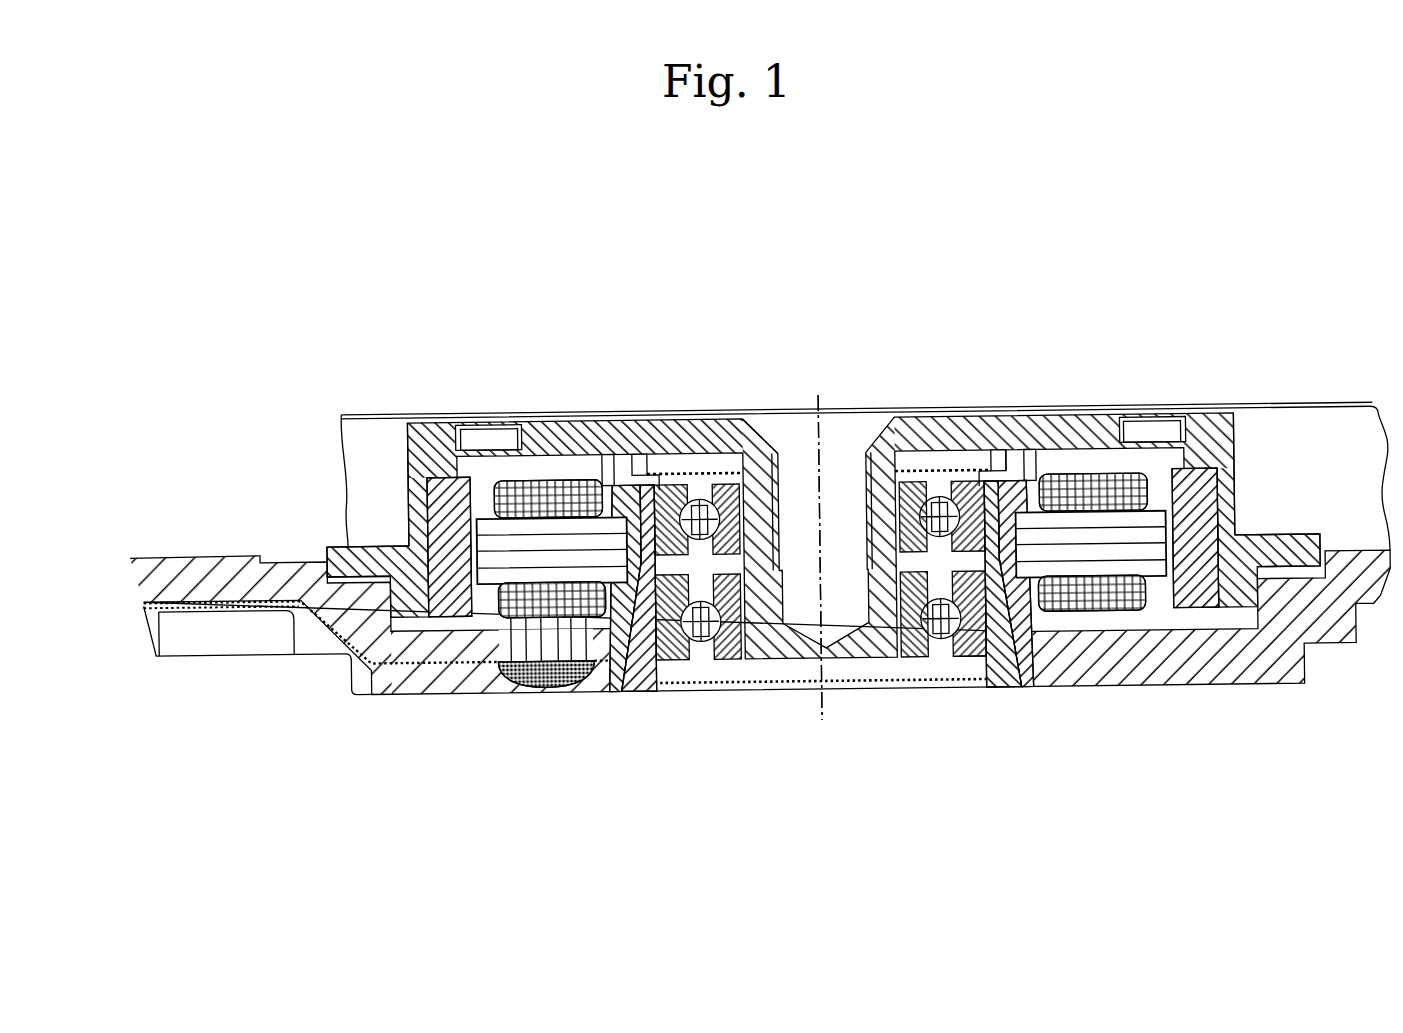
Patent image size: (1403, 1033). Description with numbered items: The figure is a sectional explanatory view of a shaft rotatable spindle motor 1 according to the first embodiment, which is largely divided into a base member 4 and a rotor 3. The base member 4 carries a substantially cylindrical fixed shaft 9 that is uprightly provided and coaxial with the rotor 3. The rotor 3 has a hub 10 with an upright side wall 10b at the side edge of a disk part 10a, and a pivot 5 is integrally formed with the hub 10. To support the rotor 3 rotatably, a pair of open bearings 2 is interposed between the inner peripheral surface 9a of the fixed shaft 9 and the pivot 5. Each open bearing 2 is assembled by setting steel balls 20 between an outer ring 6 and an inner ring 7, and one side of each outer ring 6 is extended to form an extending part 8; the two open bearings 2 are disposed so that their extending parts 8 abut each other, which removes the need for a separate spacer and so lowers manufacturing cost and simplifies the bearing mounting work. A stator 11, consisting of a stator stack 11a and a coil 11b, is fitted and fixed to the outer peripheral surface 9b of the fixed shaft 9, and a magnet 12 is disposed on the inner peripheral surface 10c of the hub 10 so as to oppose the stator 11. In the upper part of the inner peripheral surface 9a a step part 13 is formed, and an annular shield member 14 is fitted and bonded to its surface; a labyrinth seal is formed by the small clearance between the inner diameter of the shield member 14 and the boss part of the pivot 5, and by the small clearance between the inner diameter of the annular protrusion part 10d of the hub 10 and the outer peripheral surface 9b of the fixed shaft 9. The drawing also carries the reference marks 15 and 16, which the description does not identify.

The spindle motor 1 is at (1020, 297).
The open bearings 2 is at (970, 460).
The rotor 3 is at (1240, 458).
The base member 4 is at (1053, 690).
The pivot 5 is at (857, 658).
The outer ring 6 is at (662, 455).
The inner ring 7 is at (903, 465).
The extending part 8 is at (622, 663).
The fixed shaft 9 is at (1000, 455).
The inner peripheral surface 9a is at (977, 658).
The outer peripheral surface 9b is at (1030, 455).
The hub 10 is at (398, 462).
The disk part 10a is at (566, 435).
The upright side wall 10b is at (415, 502).
The inner peripheral surface 10c is at (388, 697).
The annular protrusion part 10d is at (623, 445).
The stator 11 is at (487, 500).
The stator stack 11a is at (487, 590).
The coil 11b is at (513, 613).
The magnet 12 is at (443, 600).
The step part 13 is at (682, 447).
The annular shield member 14 is at (709, 448).
The hub shoulder 15 is at (750, 445).
The core holder 16 is at (613, 465).
The steel balls 20 is at (712, 645).